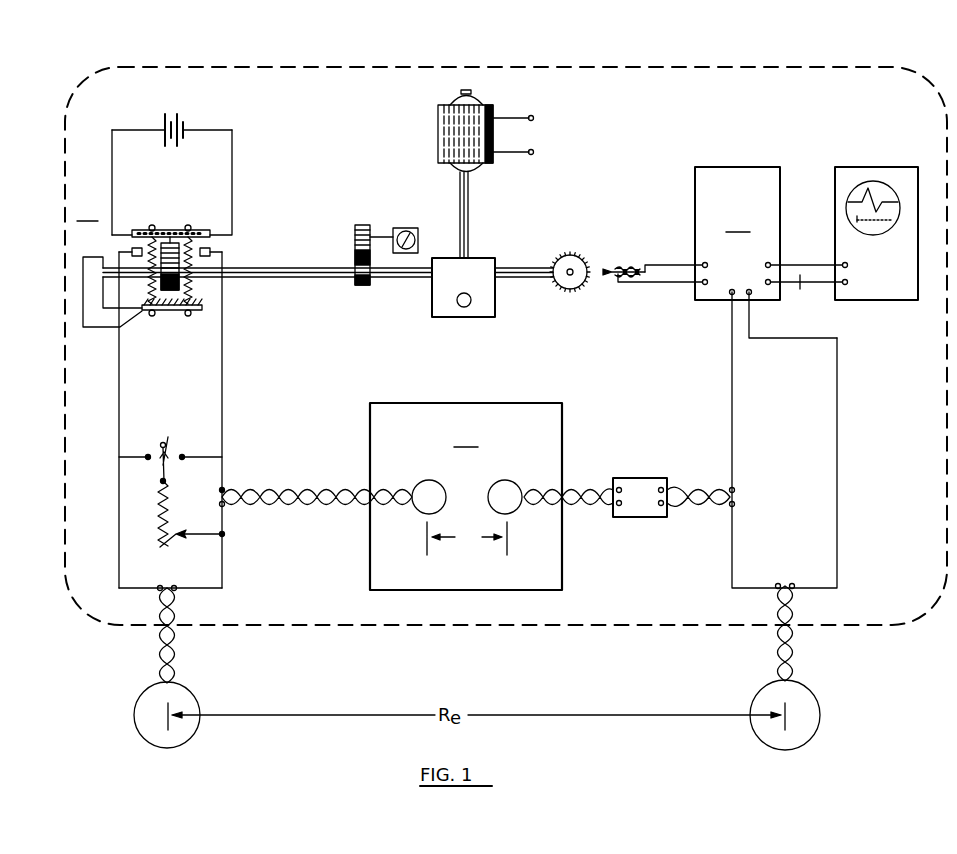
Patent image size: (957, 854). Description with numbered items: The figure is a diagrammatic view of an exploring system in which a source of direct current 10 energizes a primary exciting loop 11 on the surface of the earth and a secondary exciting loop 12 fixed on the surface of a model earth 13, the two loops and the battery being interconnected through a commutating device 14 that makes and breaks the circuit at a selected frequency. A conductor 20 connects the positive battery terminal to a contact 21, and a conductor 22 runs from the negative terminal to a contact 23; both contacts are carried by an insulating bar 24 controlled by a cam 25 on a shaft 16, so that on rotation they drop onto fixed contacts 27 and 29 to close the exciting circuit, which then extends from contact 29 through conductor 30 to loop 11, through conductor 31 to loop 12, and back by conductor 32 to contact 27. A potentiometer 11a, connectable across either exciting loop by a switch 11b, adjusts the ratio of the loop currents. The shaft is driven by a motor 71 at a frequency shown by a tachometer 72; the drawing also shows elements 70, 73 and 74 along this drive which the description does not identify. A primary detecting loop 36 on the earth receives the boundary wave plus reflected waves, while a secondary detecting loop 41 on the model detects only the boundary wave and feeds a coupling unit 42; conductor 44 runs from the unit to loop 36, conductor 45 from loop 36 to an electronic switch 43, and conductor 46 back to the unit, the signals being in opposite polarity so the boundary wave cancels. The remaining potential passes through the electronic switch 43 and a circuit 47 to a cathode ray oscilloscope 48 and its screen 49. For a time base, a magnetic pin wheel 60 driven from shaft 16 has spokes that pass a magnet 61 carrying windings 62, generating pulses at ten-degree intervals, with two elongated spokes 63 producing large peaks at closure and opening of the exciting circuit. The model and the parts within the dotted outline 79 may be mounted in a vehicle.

The source of direct current 10 is at (166, 116).
The primary exciting loop 11 is at (183, 700).
The potentiometer 11a is at (176, 513).
The switch 11b is at (165, 454).
The secondary exciting loop 12 is at (424, 486).
The model earth 13 is at (466, 496).
The commutating device 14 is at (109, 264).
The shaft 16 is at (286, 268).
The conductor 20 is at (232, 178).
The contact 21 is at (208, 231).
The conductor 22 is at (112, 180).
The contact 23 is at (134, 231).
The insulating bar 24 is at (168, 243).
The cam 25 is at (180, 281).
The contact 27 is at (212, 250).
The contact 29 is at (132, 250).
The conductor 30 is at (119, 512).
The conductor 31 is at (222, 572).
The conductor 32 is at (222, 386).
The primary detecting loop 36 is at (770, 697).
The secondary detecting loop 41 is at (500, 486).
The coupling unit 42 is at (628, 478).
The electronic switch 43 is at (737, 233).
The conductor 44 is at (732, 562).
The conductor 45 is at (837, 558).
The conductor 46 is at (732, 398).
The circuit 47 is at (809, 288).
The cathode ray oscilloscope 48 is at (875, 300).
The screen 49 is at (886, 188).
The pin wheel 60 is at (580, 262).
The magnet 61 is at (628, 268).
The windings 62 is at (630, 278).
The elongated spokes 63 is at (557, 256).
The gear box 70 is at (487, 258).
The motor 71 is at (438, 140).
The tachometer 72 is at (397, 228).
The cam 73 is at (357, 226).
The cam portion 74 is at (368, 285).
The dotted outline 79 is at (564, 67).